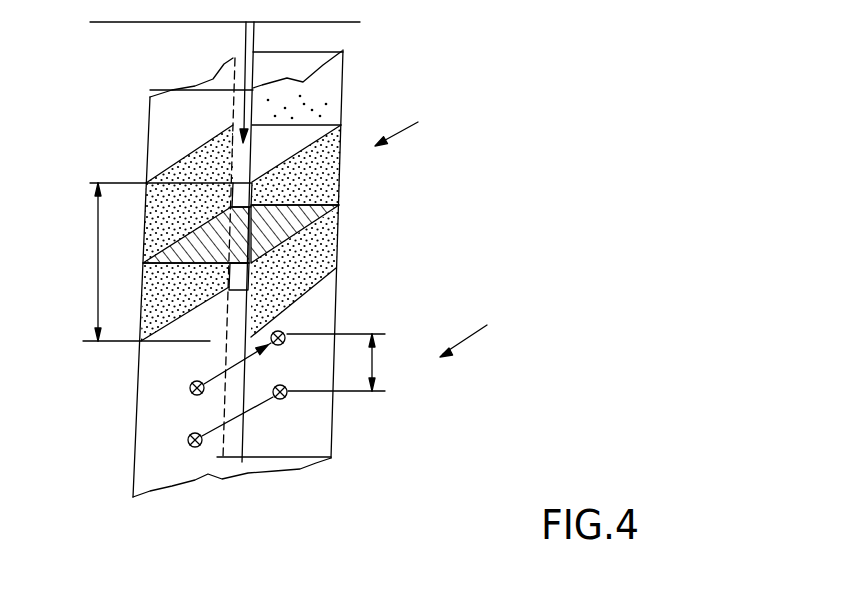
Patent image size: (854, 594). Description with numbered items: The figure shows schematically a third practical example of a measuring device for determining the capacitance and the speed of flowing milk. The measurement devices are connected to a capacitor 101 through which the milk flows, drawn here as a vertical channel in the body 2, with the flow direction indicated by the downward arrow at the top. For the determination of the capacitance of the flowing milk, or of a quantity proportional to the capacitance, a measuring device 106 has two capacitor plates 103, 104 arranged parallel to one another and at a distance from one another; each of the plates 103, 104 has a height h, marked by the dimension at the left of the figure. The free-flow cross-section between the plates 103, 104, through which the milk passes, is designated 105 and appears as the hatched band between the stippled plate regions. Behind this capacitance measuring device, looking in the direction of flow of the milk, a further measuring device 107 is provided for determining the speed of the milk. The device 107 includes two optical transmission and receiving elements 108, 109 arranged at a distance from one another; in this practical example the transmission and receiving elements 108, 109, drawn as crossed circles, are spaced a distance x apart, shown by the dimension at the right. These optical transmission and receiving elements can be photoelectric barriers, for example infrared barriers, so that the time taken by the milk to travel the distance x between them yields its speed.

The workpiece 2 is at (253, 33).
The capacitor 101 is at (208, 77).
The capacitor plate 103 is at (197, 282).
The capacitor plate 104 is at (337, 265).
The free-flow cross-section 105 is at (342, 196).
The measuring device 106 is at (406, 117).
The measuring device 107 is at (474, 327).
The optical transmission and receiving element 108 is at (284, 344).
The optical transmission and receiving element 109 is at (204, 391).